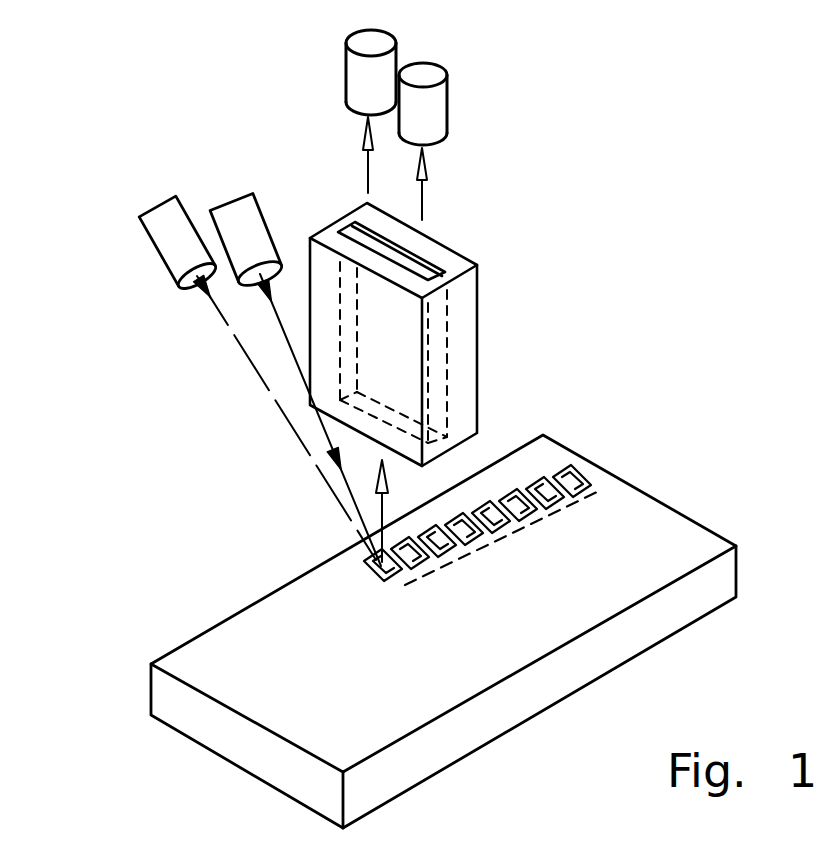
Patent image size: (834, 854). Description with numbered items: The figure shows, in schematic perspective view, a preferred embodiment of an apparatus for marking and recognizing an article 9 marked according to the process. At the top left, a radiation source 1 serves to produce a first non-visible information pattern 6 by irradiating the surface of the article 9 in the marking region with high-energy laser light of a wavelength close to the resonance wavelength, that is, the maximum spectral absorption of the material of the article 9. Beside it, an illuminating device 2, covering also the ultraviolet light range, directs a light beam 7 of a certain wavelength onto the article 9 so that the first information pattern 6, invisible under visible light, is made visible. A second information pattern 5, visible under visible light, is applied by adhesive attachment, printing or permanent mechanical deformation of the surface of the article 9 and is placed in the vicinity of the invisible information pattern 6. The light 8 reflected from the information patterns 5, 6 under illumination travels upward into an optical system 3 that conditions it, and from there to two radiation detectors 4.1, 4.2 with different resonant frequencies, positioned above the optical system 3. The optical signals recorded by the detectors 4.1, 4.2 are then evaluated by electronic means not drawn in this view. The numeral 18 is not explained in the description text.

The radiation source 1 is at (158, 218).
The illuminating device 2 is at (240, 240).
The optical system 3 is at (457, 262).
The radiation detector 4.1 is at (367, 88).
The radiation detector 4.2 is at (432, 120).
The second information pattern 5 is at (543, 460).
The first non-visible information pattern 6 is at (579, 489).
The light beam 7 is at (280, 328).
The reflected light 8 is at (380, 505).
The article 9 is at (231, 652).
The second light beam 18 is at (277, 403).